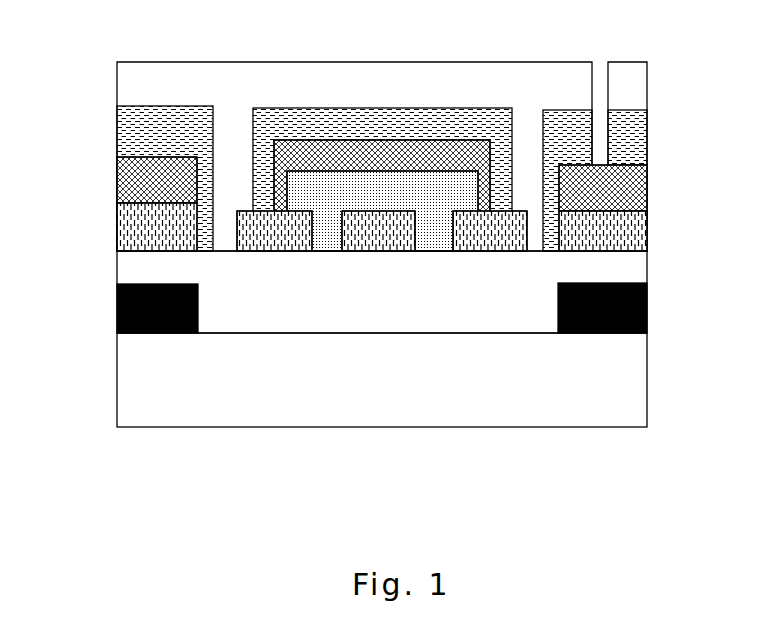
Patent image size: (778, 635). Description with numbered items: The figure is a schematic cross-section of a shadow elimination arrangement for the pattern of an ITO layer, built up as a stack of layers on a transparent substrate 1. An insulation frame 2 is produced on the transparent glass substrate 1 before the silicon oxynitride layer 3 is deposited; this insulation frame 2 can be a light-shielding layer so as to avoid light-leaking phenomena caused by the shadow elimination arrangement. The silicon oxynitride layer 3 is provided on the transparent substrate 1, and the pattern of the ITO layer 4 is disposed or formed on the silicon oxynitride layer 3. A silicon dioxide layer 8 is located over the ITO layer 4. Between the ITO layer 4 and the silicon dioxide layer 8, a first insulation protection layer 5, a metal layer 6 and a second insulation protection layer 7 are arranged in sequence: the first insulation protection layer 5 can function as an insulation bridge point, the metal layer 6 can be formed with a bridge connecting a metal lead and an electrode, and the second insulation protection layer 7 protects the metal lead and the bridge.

The transparent substrate 1 is at (416, 380).
The insulation frame 2 is at (416, 308).
The silicon oxynitride layer 3 is at (416, 292).
The ITO layer 4 is at (416, 225).
The first insulation protection layer 5 is at (501, 189).
The metal layer 6 is at (348, 176).
The second insulation protection layer 7 is at (348, 168).
The silicon dioxide layer 8 is at (348, 140).